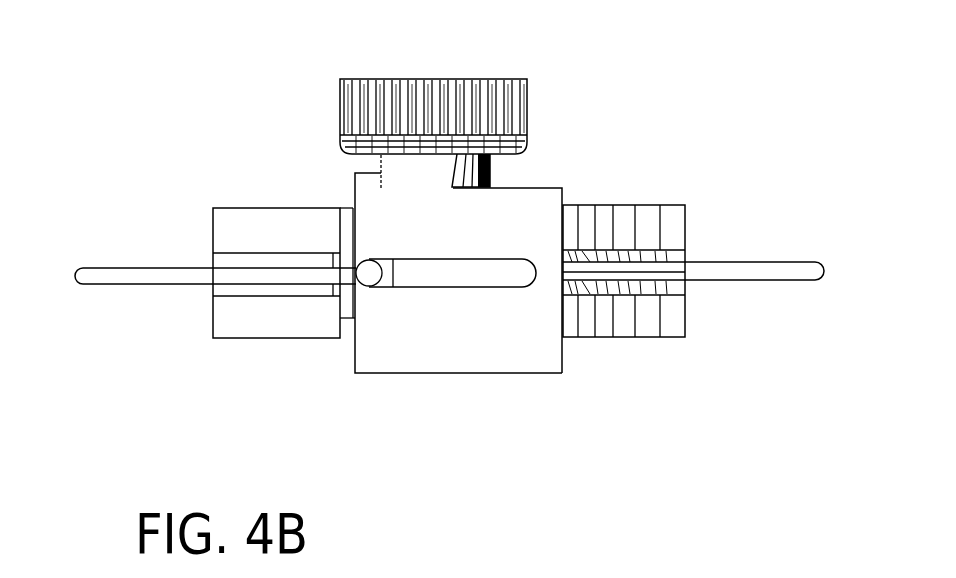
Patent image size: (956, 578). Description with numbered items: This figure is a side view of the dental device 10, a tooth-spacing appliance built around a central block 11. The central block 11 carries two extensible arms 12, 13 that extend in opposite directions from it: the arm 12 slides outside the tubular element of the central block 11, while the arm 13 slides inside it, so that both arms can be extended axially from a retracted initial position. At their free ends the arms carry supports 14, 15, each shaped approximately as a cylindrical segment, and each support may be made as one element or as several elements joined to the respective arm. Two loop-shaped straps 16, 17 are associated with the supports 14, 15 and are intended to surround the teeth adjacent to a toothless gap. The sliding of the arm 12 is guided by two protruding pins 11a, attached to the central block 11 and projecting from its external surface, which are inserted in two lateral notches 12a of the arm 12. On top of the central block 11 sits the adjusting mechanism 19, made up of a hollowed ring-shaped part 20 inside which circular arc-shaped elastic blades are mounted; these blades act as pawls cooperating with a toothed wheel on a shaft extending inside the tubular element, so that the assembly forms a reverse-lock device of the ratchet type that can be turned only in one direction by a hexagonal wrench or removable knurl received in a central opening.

The dental device 10 is at (646, 96).
The central block 11 is at (451, 383).
The protruding pins 11a is at (369, 272).
The extensible arm 12 is at (530, 330).
The lateral notches 12a is at (507, 273).
The extensible arm 13 is at (342, 318).
The support 14 is at (238, 327).
The support 15 is at (677, 317).
The loop-shaped strap 16 is at (123, 270).
The loop-shaped strap 17 is at (757, 262).
The adjusting mechanism 19 is at (432, 50).
The hollowed ring-shaped part 20 is at (513, 94).